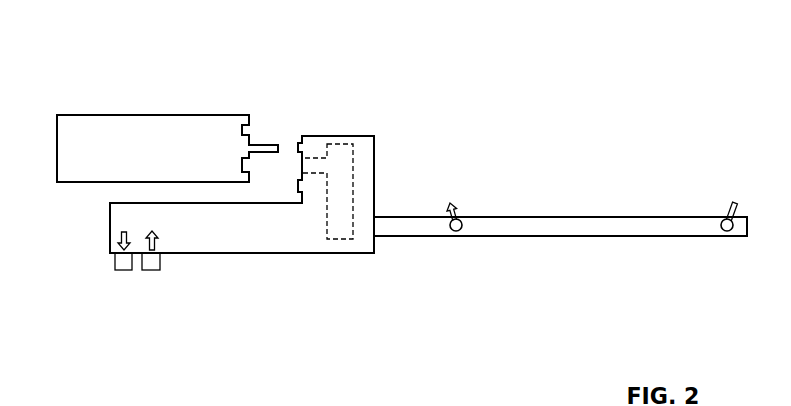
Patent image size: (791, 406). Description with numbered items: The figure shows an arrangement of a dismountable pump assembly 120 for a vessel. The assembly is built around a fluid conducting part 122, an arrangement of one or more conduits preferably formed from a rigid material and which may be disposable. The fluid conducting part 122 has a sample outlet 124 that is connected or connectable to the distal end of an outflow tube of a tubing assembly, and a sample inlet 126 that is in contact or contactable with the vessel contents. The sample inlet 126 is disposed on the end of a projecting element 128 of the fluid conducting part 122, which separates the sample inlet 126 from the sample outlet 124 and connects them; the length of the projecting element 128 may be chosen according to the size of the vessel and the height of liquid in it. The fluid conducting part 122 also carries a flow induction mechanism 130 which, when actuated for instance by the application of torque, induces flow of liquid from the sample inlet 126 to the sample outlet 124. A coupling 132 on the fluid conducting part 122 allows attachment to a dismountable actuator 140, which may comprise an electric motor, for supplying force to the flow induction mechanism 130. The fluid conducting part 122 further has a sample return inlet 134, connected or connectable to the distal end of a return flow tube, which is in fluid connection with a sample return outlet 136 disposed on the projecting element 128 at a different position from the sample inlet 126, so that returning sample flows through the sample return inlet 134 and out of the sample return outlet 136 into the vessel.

The dismountable pump assembly 120 is at (340, 66).
The fluid conducting part 122 is at (435, 148).
The sample outlet 124 is at (122, 266).
The sample inlet 126 is at (724, 235).
The projecting element 128 is at (594, 237).
The flow induction mechanism 130 is at (343, 236).
The coupling 132 is at (293, 142).
The sample return inlet 134 is at (150, 267).
The sample return outlet 136 is at (455, 232).
The dismountable actuator 140 is at (186, 116).